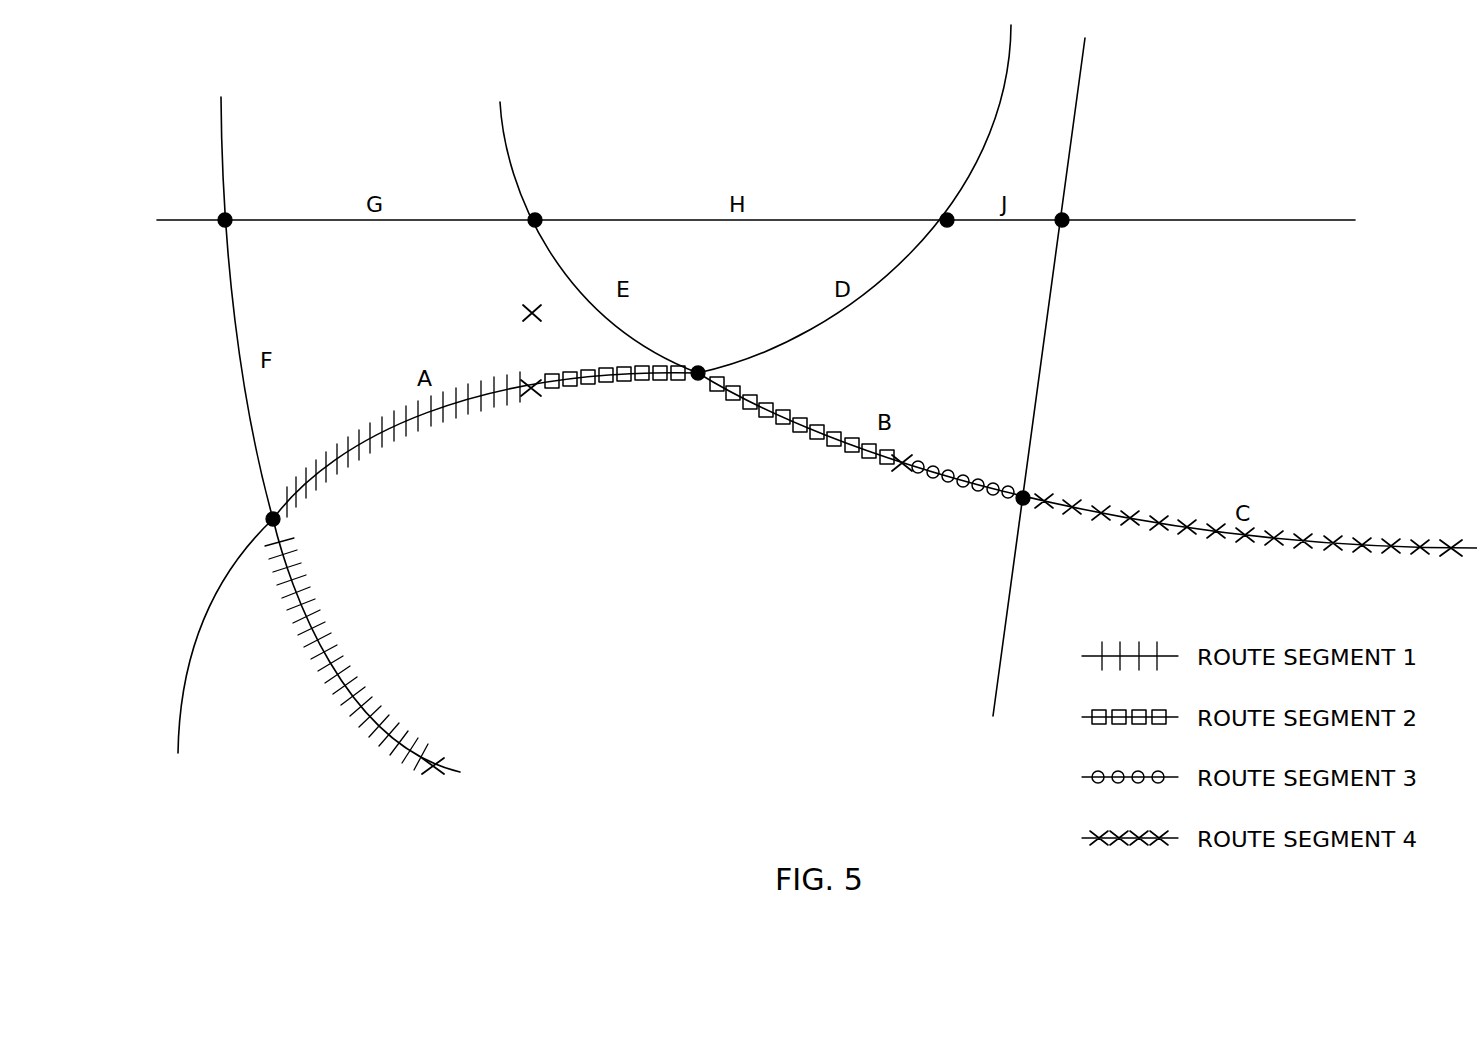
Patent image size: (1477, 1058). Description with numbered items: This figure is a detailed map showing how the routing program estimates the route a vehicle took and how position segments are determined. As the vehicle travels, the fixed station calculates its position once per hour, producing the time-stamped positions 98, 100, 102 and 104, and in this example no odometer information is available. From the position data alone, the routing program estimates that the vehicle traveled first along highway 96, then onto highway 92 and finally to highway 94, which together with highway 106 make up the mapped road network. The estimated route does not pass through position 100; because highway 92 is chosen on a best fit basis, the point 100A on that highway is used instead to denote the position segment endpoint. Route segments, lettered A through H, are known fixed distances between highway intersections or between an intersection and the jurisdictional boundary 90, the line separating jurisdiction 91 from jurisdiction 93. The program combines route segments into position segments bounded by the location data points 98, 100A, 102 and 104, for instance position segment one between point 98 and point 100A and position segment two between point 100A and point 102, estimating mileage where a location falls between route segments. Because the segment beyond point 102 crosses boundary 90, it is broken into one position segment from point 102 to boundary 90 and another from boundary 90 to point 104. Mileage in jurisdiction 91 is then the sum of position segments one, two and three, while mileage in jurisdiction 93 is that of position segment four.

The jurisdictional boundary 90 is at (1078, 100).
The jurisdiction 91 is at (355, 123).
The jurisdiction 93 is at (1186, 166).
The highway 92 is at (407, 456).
The highway 94 is at (1412, 535).
The highway 96 is at (345, 650).
The highway 106 is at (1326, 222).
The vehicle position 98 is at (442, 757).
The vehicle position 100 is at (527, 302).
The position segment endpoint 100A is at (535, 401).
The vehicle position 102 is at (900, 472).
The vehicle position 104 is at (1448, 561).